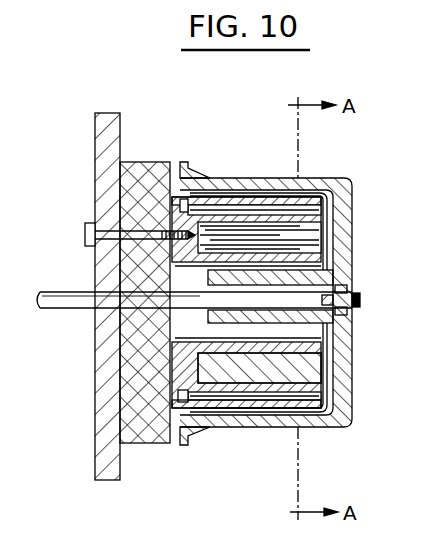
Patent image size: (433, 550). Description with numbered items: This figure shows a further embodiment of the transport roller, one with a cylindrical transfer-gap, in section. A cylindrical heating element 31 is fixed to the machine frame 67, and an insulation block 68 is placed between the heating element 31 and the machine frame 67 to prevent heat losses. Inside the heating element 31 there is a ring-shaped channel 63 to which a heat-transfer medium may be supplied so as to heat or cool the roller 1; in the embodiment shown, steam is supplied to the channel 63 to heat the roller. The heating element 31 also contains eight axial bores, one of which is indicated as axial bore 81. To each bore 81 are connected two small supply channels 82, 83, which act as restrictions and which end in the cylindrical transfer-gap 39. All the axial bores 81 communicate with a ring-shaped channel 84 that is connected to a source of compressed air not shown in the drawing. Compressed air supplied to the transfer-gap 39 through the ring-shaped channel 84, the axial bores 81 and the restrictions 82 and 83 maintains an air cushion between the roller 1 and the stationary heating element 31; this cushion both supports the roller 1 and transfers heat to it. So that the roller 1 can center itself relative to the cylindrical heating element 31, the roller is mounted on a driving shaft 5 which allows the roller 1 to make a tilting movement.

The roller 1 is at (343, 222).
The driving shaft 5 is at (63, 298).
The cylindrical heating element 31 is at (173, 253).
The cylindrical transfer-gap 39 is at (230, 410).
The ring-shaped channel 63 is at (307, 240).
The machine frame 67 is at (101, 142).
The insulation block 68 is at (139, 163).
The axial bore 81 is at (334, 206).
The supply channel 82 is at (213, 197).
The supply channel 83 is at (298, 202).
The ring-shaped channel 84 is at (182, 396).